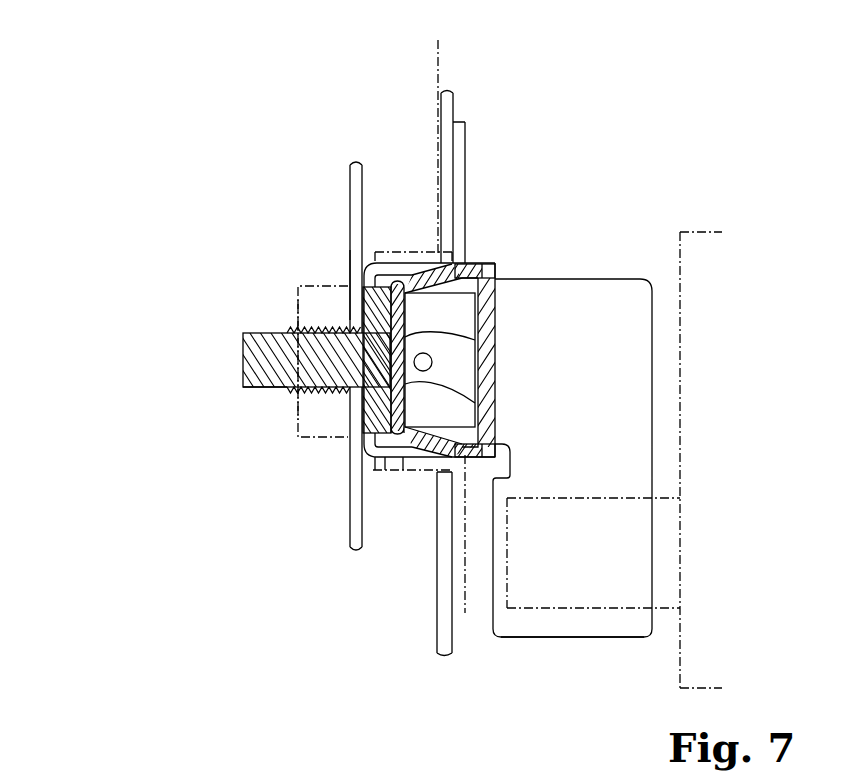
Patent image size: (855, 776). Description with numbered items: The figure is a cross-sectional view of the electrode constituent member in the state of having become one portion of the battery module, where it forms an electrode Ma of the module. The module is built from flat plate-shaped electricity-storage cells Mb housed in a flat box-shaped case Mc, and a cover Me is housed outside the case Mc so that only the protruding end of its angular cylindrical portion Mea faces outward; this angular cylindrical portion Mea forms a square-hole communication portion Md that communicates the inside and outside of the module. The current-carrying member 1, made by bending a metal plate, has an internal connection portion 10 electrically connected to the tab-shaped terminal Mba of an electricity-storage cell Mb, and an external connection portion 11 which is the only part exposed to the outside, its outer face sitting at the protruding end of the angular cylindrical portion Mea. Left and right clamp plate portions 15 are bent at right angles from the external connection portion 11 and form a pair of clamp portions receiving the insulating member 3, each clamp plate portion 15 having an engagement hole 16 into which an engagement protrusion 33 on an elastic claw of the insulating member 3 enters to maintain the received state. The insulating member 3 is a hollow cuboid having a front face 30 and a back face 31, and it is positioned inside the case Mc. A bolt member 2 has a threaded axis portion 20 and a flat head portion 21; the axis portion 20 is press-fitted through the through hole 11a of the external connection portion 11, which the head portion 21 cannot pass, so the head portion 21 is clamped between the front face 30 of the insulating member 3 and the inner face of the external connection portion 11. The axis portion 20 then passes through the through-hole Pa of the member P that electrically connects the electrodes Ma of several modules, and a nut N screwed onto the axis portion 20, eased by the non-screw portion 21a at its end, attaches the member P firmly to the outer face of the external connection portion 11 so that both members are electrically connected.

The bolt member 2 is at (281, 360).
The axis portion 20 is at (243, 360).
The non-screw portion 21a is at (258, 388).
The nut N is at (297, 420).
The electrode Ma is at (280, 286).
The member P is at (345, 477).
The through-hole Pa is at (347, 315).
The external connection portion 11 is at (362, 412).
The through hole 11a is at (363, 405).
The engagement hole 16 is at (412, 273).
The insulating member 3 is at (445, 423).
The head portion 21 is at (445, 423).
The back face 31 is at (495, 312).
The engagement protrusion 33 is at (450, 267).
The clamp plate portion 15 is at (472, 268).
The front face 30 is at (480, 392).
The current-carrying member 1 is at (622, 400).
The internal connection portion 10 is at (577, 627).
The tab-shaped terminal Mba is at (630, 577).
The electricity-storage cell Mb is at (680, 232).
The case Mc is at (441, 129).
The cover Me is at (465, 140).
The angular cylindrical portion Mea is at (390, 253).
The communication portion Md is at (403, 470).